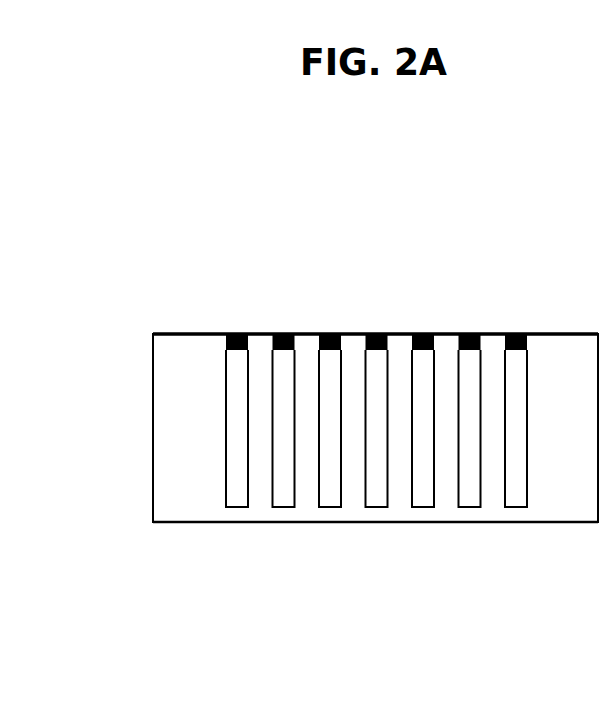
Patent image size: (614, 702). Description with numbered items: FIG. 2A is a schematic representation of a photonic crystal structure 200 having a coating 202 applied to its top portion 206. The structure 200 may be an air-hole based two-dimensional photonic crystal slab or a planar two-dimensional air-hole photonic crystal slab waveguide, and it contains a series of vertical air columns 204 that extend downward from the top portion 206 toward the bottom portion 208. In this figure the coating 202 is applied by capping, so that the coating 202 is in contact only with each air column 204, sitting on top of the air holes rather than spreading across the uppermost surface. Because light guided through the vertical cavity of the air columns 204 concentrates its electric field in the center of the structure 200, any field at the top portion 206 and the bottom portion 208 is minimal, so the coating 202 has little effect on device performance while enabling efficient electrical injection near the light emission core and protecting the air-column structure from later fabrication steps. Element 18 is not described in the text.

The photonic crystal structure 200 is at (160, 205).
The coating 202 is at (292, 333).
The air column 204 is at (237, 470).
The top portion 206 is at (203, 352).
The bottom portion 208 is at (428, 522).
The sensing element 18 is at (517, 332).